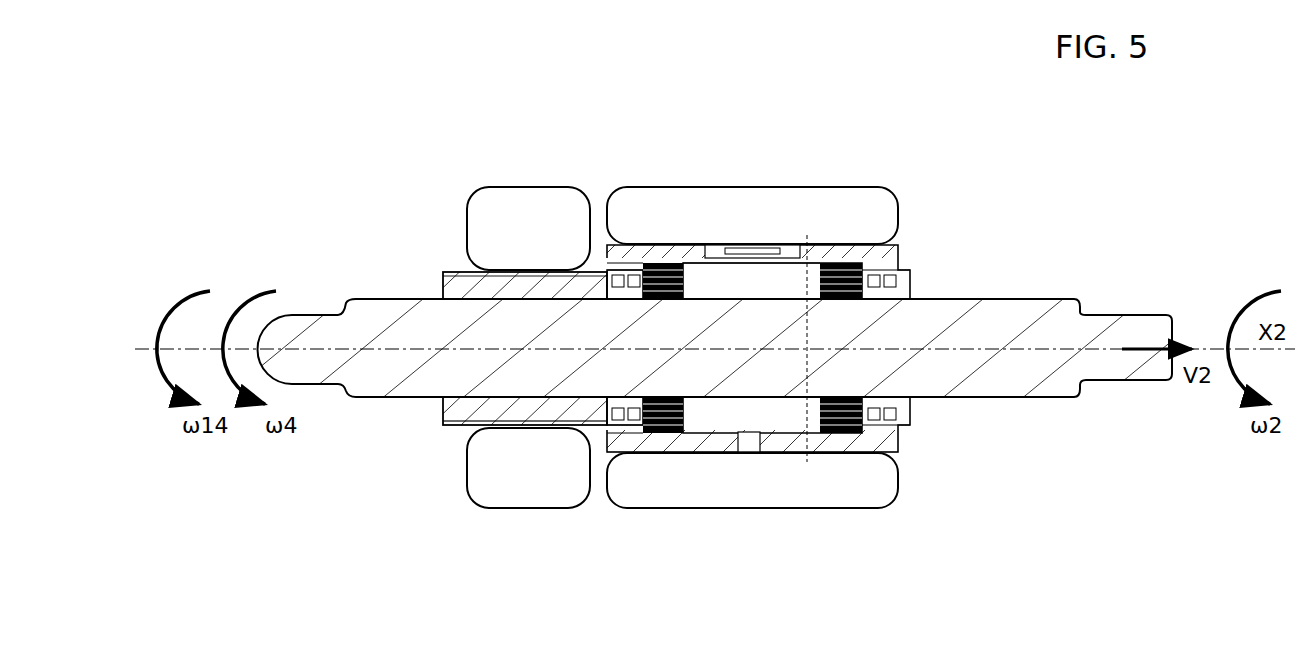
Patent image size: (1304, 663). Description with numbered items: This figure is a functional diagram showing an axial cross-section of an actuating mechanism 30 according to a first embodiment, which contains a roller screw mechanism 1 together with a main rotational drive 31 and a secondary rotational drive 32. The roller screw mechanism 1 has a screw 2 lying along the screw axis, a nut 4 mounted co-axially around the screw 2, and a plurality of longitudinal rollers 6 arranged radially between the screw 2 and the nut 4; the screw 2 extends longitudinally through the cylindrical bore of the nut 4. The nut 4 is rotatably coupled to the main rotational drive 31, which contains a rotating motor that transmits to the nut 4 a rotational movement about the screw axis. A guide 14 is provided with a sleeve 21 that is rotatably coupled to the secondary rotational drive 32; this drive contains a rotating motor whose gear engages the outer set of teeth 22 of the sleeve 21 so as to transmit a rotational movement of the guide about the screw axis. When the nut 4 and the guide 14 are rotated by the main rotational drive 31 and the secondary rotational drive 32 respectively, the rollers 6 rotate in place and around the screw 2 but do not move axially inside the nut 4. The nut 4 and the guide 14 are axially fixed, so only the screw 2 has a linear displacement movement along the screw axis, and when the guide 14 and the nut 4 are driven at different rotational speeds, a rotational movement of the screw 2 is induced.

The roller screw mechanism 1 is at (908, 262).
The screw 2 is at (1090, 383).
The nut 4 is at (823, 442).
The longitudinal rollers 6 is at (695, 275).
The guide 14 is at (437, 290).
The sleeve 21 is at (567, 410).
The outer set of teeth 22 is at (460, 428).
The actuating mechanism 30 is at (450, 183).
The main rotational drive 31 is at (787, 215).
The secondary rotational drive 32 is at (530, 213).